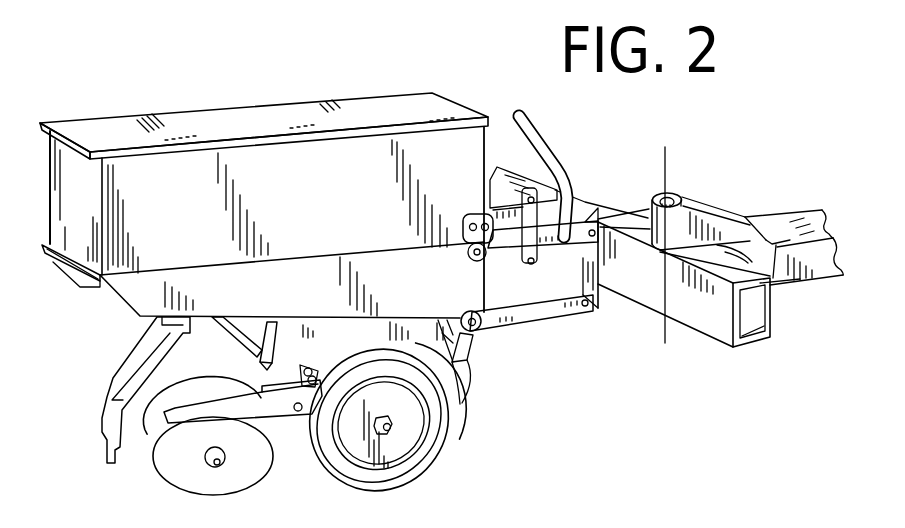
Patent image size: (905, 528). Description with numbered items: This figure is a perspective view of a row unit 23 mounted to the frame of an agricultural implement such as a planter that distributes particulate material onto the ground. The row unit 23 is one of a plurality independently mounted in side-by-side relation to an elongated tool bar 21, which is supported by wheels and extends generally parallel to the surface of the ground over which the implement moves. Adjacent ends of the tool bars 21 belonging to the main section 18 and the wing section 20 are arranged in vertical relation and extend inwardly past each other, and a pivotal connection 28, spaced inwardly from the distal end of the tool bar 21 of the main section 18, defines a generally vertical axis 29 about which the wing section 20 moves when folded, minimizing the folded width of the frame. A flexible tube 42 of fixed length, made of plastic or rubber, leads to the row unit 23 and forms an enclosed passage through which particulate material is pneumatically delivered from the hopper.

The main section 18 is at (696, 341).
The wing section 20 is at (817, 291).
The tool bar 21 is at (737, 228).
The row unit 23 is at (289, 201).
The pivotal connection 28 is at (690, 195).
The vertical axis 29 is at (665, 162).
The tube 42 is at (558, 150).